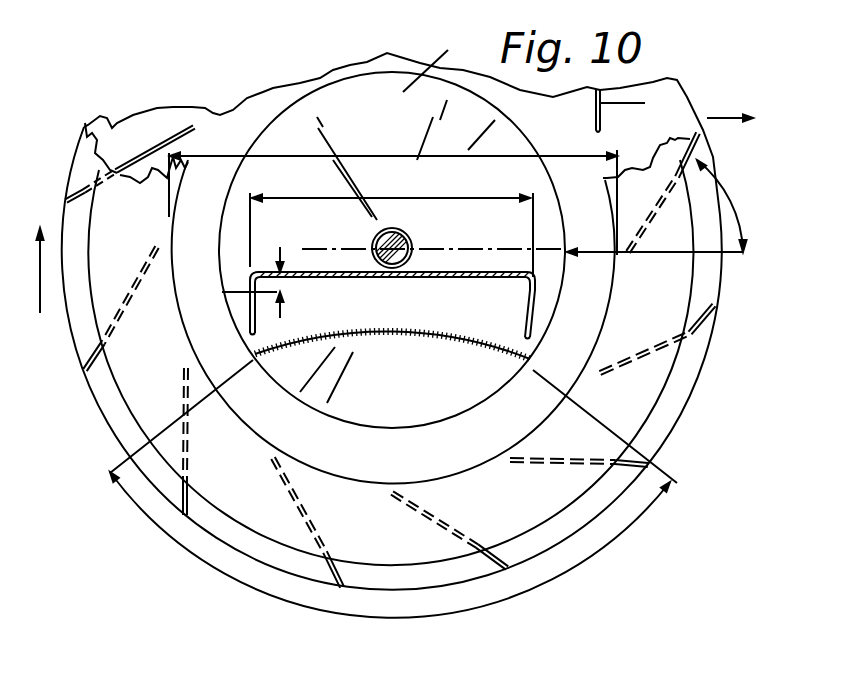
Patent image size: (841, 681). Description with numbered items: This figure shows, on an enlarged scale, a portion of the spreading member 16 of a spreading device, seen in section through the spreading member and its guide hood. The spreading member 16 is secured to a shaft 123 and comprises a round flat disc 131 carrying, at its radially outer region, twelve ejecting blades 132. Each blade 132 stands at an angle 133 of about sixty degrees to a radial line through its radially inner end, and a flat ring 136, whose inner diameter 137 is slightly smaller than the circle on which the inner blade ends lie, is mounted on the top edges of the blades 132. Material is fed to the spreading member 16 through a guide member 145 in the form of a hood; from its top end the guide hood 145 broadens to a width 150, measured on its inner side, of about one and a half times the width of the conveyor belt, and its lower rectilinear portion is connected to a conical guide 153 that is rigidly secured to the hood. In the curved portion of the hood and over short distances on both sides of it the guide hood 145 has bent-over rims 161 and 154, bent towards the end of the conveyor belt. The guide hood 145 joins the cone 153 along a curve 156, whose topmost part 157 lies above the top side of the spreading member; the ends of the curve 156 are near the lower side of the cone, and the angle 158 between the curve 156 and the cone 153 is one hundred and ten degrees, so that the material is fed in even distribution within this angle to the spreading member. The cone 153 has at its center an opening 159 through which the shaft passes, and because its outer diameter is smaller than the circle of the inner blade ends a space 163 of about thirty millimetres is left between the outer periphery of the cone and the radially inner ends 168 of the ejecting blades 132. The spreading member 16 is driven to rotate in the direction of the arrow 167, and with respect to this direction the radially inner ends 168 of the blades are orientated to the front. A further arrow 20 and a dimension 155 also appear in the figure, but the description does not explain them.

The spreading member 16 is at (260, 88).
The direction of travel arrow 20 is at (720, 117).
The shaft 123 is at (372, 240).
The round flat disc 131 is at (362, 65).
The ejecting blades 132 is at (100, 127).
The angle 133 is at (750, 168).
The flat ring 136 is at (488, 463).
The inner diameter 137 is at (403, 136).
The guide hood 145 is at (477, 268).
The width 150 is at (417, 196).
The conical guide 153 is at (437, 56).
The bent-over rim 154 is at (537, 293).
The spacing 155 is at (282, 292).
The curve 156 is at (420, 331).
The topmost part of the curve 157 is at (420, 333).
The angle 158 is at (380, 615).
The opening 159 is at (418, 240).
The bent-over rim 161 is at (222, 292).
The space 163 is at (600, 250).
The arrow 167 is at (40, 313).
The radially inner ends of the ejecting blades 168 is at (194, 127).